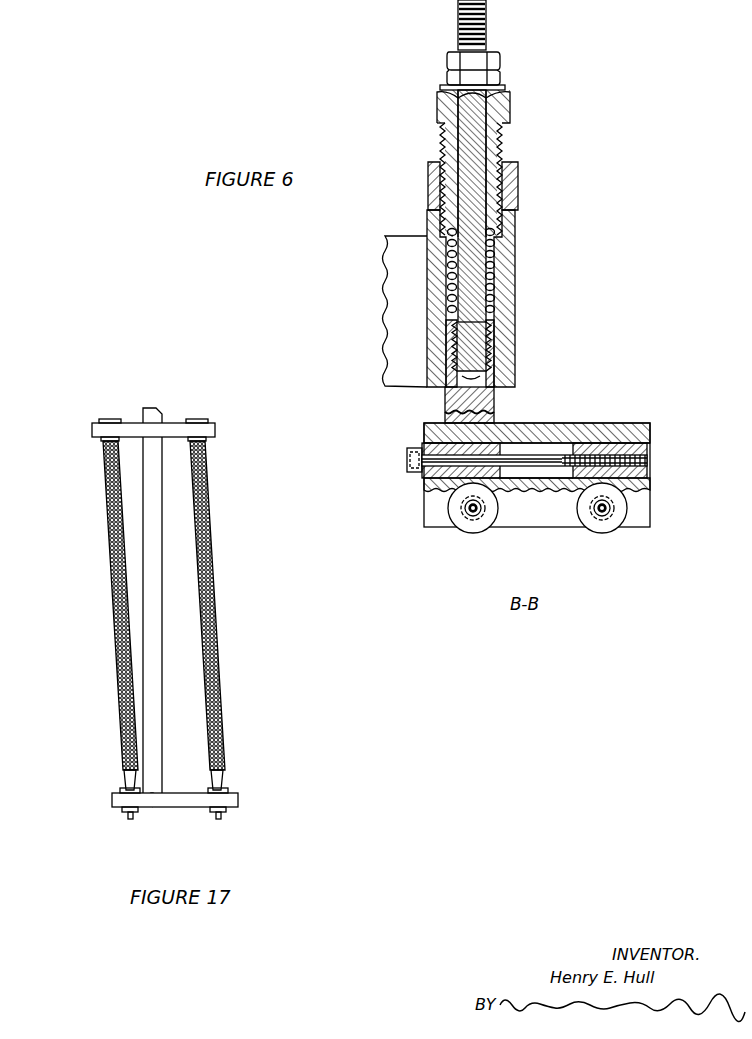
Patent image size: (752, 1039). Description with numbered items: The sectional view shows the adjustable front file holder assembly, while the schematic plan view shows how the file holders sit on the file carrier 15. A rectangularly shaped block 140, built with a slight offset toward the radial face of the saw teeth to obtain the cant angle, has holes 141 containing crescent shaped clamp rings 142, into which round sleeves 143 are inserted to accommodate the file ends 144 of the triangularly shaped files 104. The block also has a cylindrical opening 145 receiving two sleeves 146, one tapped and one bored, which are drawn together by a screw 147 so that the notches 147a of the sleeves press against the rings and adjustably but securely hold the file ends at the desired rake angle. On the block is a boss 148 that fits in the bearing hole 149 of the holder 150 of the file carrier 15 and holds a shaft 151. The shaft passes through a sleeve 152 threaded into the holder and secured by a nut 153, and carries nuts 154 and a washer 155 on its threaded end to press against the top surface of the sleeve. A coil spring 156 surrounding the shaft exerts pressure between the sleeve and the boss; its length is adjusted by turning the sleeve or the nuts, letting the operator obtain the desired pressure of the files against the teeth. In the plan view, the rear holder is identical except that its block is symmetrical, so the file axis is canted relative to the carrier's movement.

In FIG. 6, the file carrier 15 is at (388, 248).
In FIG. 17, the file carrier 15 is at (152, 602).
In FIG. 17, the files 104 is at (108, 582).
In FIG. 6, the rectangularly shaped block 140 is at (640, 432).
In FIG. 17, the rectangularly shaped block 140 is at (238, 800).
In FIG. 6, the holes 141 is at (455, 516).
In FIG. 6, the crescent shaped clamp rings 142 is at (455, 500).
In FIG. 17, the crescent shaped clamp rings 142 is at (105, 419).
In FIG. 6, the round sleeves 143 is at (470, 518).
In FIG. 6, the file ends 144 is at (478, 513).
In FIG. 17, the file ends 144 is at (130, 820).
In FIG. 6, the cylindrical opening 145 is at (648, 462).
In FIG. 6, the sleeves 146 is at (422, 430).
In FIG. 6, the screw 147 is at (408, 452).
In FIG. 6, the notches 147a is at (505, 490).
In FIG. 6, the boss 148 is at (494, 406).
In FIG. 6, the bearing hole 149 is at (497, 348).
In FIG. 6, the holder 150 is at (516, 302).
In FIG. 6, the shaft 151 is at (480, 272).
In FIG. 17, the shaft 151 is at (152, 426).
In FIG. 6, the sleeve 152 is at (496, 139).
In FIG. 6, the nut 153 is at (519, 182).
In FIG. 6, the nuts 154 is at (497, 78).
In FIG. 6, the washer 155 is at (506, 87).
In FIG. 6, the coil spring 156 is at (496, 243).